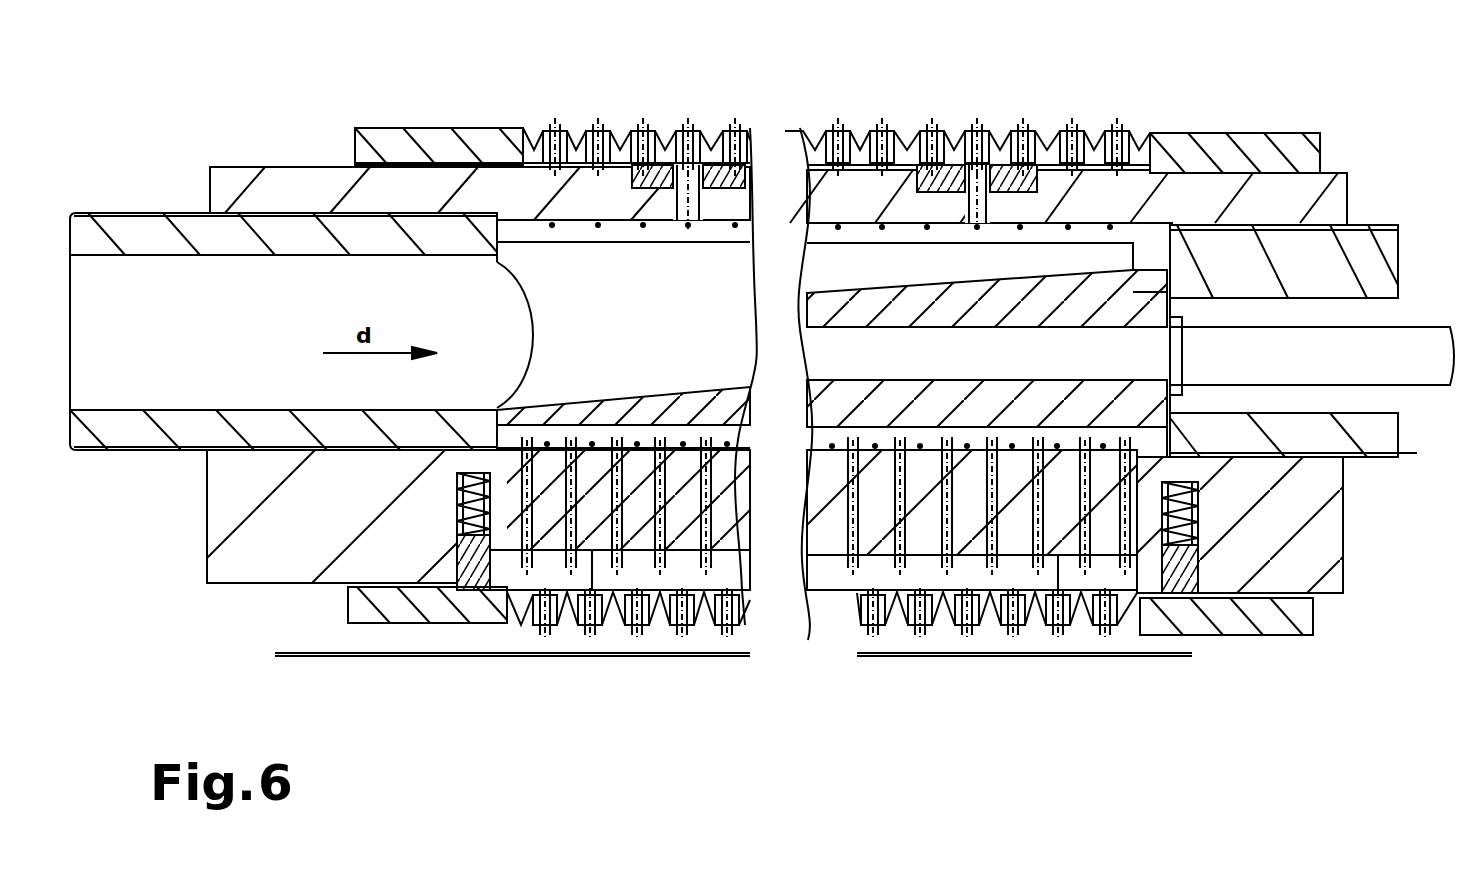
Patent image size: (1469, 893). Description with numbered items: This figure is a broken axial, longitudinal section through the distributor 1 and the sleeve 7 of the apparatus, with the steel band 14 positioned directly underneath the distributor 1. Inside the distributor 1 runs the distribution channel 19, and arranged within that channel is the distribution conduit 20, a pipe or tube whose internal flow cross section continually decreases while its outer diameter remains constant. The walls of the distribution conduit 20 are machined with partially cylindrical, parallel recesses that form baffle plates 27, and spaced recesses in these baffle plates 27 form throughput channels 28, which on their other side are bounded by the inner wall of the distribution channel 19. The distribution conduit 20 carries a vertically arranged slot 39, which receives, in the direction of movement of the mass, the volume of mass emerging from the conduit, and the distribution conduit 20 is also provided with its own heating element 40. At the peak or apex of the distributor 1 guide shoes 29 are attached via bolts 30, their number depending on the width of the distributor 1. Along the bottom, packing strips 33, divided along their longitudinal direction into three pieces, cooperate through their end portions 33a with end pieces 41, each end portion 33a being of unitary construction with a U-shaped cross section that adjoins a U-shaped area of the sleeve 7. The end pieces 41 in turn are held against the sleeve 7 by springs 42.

The distributor 1 is at (265, 560).
The sleeve 7 is at (377, 606).
The steel band 14 is at (578, 660).
The distribution channel 19 is at (862, 212).
The distribution conduit 20 is at (945, 430).
The baffle plates 27 is at (1133, 265).
The throughput channels 28 is at (1110, 223).
The guide shoes 29 is at (653, 140).
The bolts 30 is at (708, 165).
The packing strips 33 is at (648, 568).
The end portions 33a is at (520, 568).
The slot 39 is at (528, 290).
The heating element 40 is at (1106, 366).
The end pieces 41 is at (1205, 598).
The springs 42 is at (1200, 520).